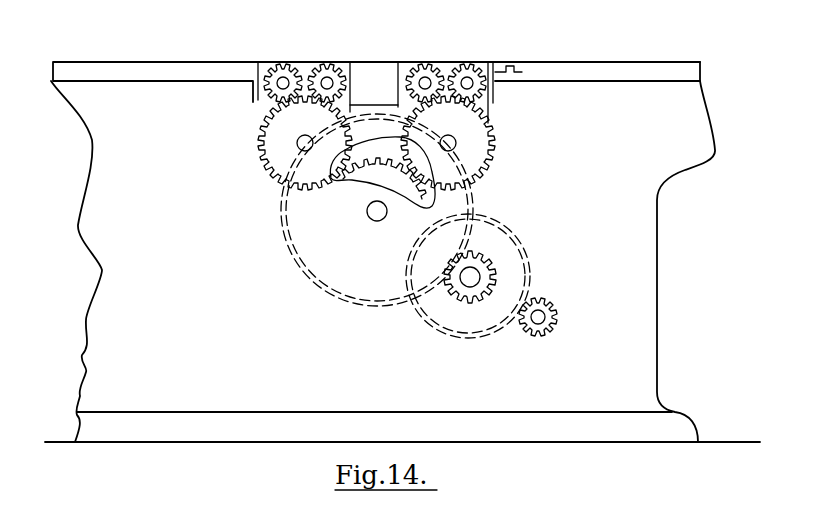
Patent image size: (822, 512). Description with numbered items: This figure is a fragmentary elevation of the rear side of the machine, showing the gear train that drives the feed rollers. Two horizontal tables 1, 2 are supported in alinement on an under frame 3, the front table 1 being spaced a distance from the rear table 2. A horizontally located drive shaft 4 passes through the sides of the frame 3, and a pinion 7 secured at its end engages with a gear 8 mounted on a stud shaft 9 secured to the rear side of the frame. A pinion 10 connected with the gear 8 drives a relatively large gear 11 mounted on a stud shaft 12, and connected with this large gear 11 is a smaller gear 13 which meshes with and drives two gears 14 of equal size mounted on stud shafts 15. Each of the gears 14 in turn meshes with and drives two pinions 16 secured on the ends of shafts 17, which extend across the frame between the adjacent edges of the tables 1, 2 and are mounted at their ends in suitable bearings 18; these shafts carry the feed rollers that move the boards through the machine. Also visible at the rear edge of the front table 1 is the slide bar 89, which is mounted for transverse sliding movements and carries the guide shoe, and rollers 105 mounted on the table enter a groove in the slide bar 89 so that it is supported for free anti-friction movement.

The horizontal table 1 is at (603, 72).
The horizontal table 2 is at (98, 72).
The under frame 3 is at (647, 281).
The drive shaft 4 is at (540, 317).
The pinion 7 is at (550, 304).
The gear 8 is at (515, 260).
The stud shaft 9 is at (470, 280).
The pinion 10 is at (484, 290).
The large gear 11 is at (412, 294).
The stud shaft 12 is at (376, 216).
The smaller gear 13 is at (385, 172).
The gear 14 is at (276, 158).
The stud shaft 15 is at (295, 138).
The pinion 16 is at (405, 82).
The shaft 17 is at (326, 80).
The bearing 18 is at (348, 62).
The slide bar 89 is at (515, 68).
The roller 105 is at (507, 77).